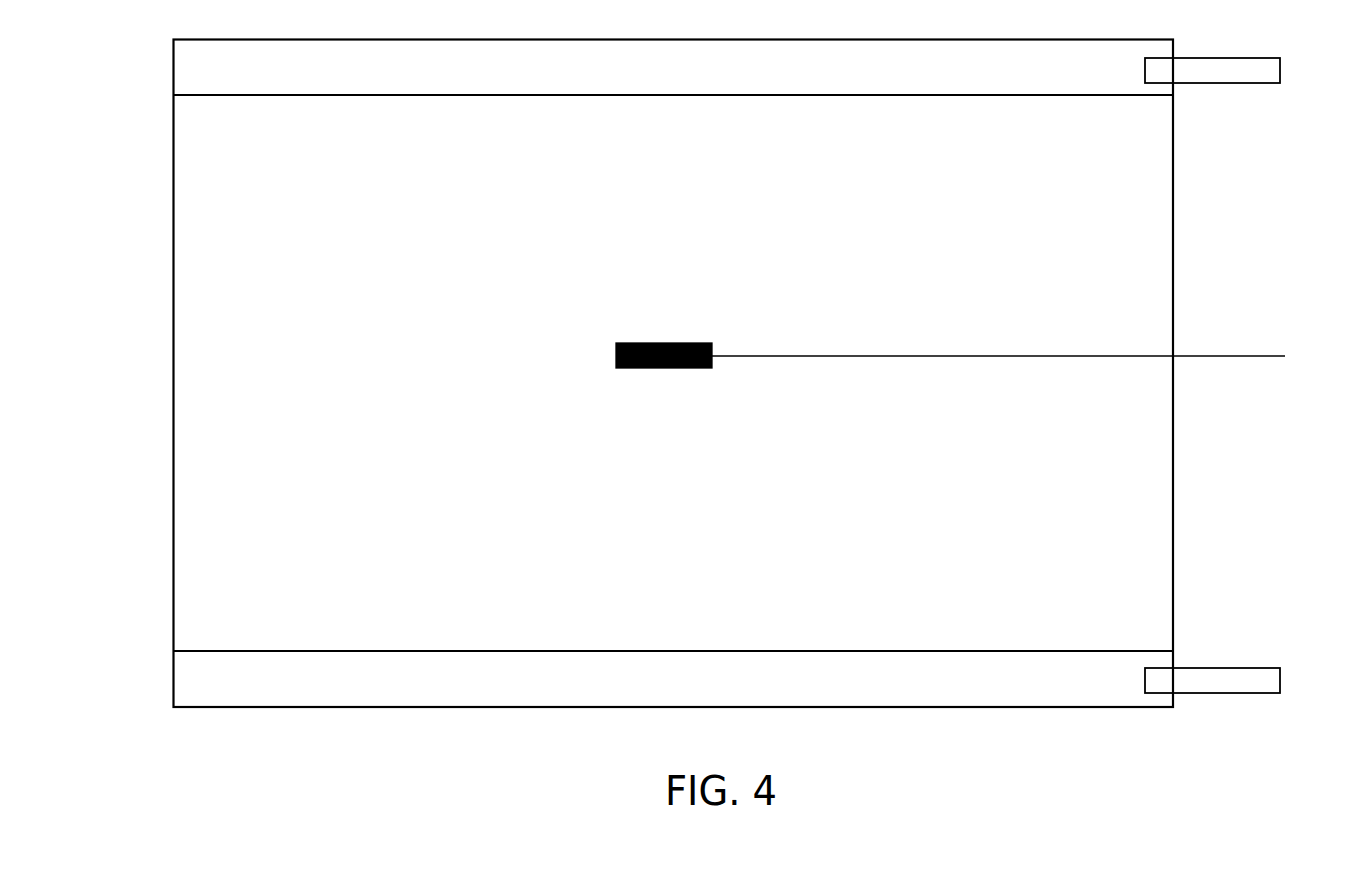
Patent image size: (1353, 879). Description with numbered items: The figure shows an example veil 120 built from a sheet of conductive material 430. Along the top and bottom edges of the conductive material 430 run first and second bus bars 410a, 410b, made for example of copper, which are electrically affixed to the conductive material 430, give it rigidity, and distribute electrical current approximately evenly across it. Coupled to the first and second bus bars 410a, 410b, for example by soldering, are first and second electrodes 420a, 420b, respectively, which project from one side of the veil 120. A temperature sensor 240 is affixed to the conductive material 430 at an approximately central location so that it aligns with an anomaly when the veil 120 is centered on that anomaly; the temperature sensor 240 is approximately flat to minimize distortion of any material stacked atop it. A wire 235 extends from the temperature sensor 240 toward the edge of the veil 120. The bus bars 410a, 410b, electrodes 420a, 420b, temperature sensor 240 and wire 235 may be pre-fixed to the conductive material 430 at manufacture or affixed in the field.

The veil 120 is at (173, 456).
The wire 235 is at (1235, 356).
The temperature sensor 240 is at (659, 368).
The first bus bar 410a is at (674, 76).
The second bus bar 410b is at (674, 671).
The first electrode 420a is at (1262, 59).
The second electrode 420b is at (1258, 667).
The conductive material 430 is at (385, 232).